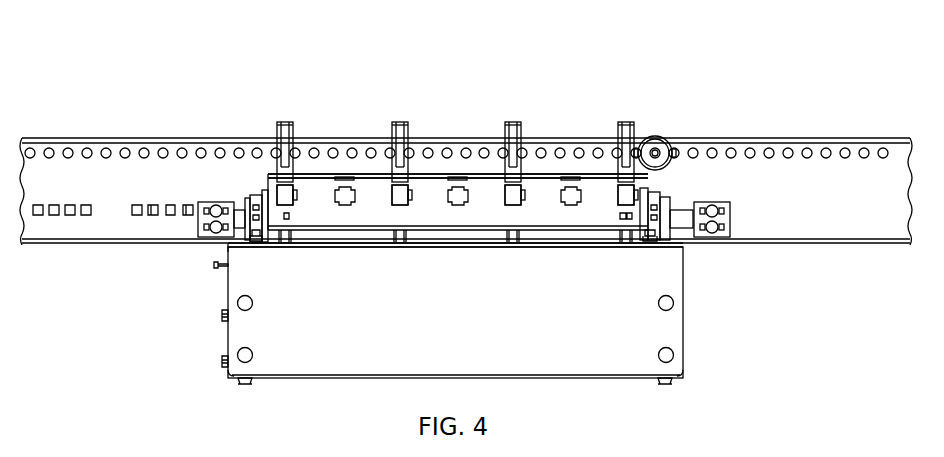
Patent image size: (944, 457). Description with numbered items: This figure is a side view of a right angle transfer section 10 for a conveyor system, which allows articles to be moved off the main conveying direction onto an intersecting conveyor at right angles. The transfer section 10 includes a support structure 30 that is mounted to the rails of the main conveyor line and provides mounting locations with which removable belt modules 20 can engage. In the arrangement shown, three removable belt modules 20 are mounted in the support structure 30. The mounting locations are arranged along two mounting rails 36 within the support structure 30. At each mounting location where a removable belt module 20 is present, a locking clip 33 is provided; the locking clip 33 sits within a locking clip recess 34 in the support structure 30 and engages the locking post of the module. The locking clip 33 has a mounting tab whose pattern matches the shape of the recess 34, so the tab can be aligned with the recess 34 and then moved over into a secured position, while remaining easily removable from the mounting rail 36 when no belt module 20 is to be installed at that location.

The right angle transfer section 10 is at (683, 70).
The removable belt module 20 is at (287, 111).
The support structure 30 is at (718, 317).
The locking clip 33 is at (277, 191).
The locking clip recess 34 is at (345, 205).
The mounting rail 36 is at (592, 172).